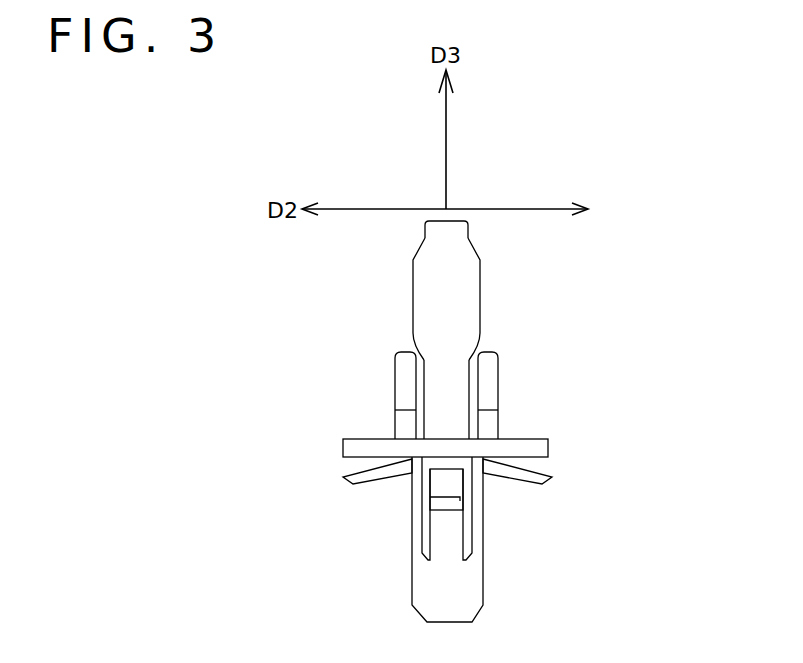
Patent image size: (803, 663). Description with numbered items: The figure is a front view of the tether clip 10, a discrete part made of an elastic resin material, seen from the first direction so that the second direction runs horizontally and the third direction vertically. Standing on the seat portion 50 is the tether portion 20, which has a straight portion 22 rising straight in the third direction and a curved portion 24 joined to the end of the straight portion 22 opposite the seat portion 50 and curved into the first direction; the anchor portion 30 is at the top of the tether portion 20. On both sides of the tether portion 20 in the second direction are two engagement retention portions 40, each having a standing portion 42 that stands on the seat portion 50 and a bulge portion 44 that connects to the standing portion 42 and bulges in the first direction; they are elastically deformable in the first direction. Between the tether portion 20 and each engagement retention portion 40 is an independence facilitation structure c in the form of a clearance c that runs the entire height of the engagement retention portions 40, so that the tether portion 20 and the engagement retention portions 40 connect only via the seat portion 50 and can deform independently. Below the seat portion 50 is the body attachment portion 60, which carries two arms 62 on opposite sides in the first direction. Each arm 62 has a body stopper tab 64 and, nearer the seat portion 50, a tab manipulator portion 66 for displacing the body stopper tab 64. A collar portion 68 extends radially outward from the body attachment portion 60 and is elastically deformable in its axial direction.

The tether clip 10 is at (491, 276).
The tether portion 20 is at (481, 399).
The straight portion 22 is at (438, 403).
The curved portion 24 is at (480, 293).
The anchor portion 30 is at (469, 230).
The engagement retention portions 40 is at (395, 352).
The standing portions 42 is at (403, 427).
The bulge portions 44 is at (405, 388).
The seat portion 50 is at (537, 448).
The body attachment portion 60 is at (460, 609).
The arms 62 is at (470, 495).
The body stopper tab 64 is at (418, 500).
The tab manipulator portion 66 is at (438, 480).
The collar portion 68 is at (343, 476).
The independence facilitation structure c is at (417, 377).